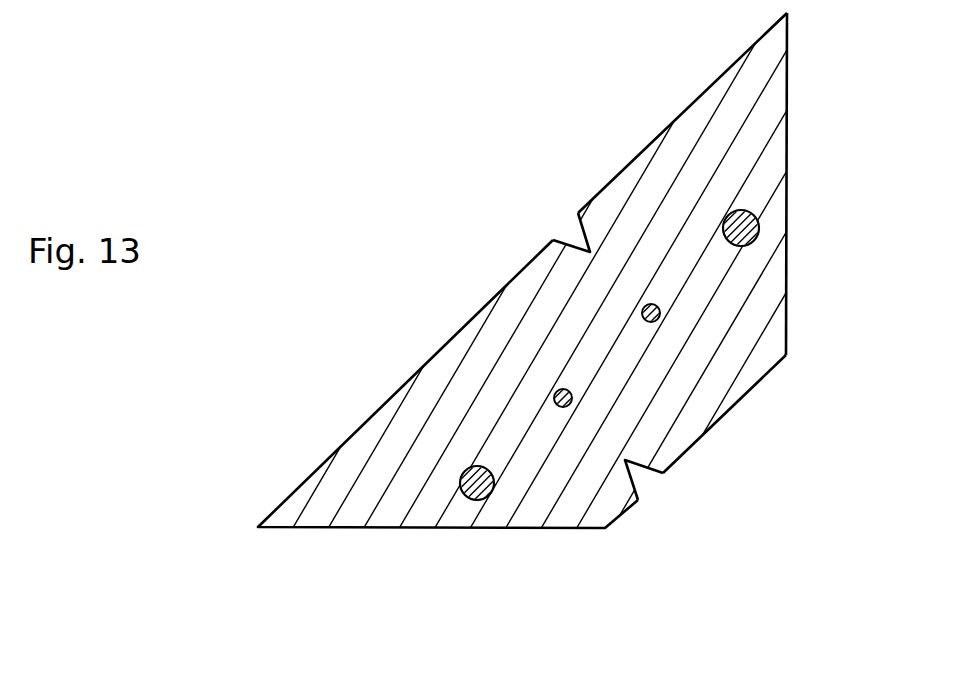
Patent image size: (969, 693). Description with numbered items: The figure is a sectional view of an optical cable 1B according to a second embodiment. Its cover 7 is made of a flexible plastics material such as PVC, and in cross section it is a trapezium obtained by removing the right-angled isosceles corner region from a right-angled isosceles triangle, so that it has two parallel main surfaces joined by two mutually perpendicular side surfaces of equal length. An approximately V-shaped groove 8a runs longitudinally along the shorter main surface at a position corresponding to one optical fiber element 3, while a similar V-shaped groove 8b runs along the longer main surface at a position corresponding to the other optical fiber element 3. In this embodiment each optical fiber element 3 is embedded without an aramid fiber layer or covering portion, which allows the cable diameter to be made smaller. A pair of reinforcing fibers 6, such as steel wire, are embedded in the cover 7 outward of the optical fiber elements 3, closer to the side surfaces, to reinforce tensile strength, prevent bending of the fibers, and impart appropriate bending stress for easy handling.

The optical cable 1B is at (567, 122).
The optical fiber element 3 is at (660, 306).
The reinforcing fiber 6 is at (758, 217).
The cover 7 is at (770, 103).
The groove 8a is at (637, 483).
The groove 8b is at (560, 236).